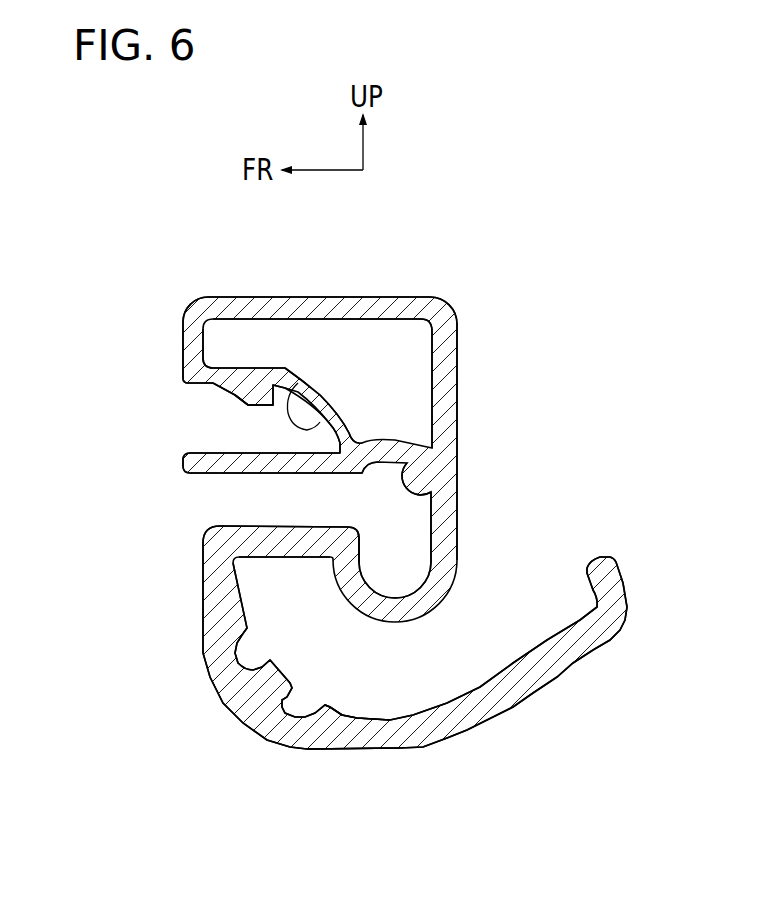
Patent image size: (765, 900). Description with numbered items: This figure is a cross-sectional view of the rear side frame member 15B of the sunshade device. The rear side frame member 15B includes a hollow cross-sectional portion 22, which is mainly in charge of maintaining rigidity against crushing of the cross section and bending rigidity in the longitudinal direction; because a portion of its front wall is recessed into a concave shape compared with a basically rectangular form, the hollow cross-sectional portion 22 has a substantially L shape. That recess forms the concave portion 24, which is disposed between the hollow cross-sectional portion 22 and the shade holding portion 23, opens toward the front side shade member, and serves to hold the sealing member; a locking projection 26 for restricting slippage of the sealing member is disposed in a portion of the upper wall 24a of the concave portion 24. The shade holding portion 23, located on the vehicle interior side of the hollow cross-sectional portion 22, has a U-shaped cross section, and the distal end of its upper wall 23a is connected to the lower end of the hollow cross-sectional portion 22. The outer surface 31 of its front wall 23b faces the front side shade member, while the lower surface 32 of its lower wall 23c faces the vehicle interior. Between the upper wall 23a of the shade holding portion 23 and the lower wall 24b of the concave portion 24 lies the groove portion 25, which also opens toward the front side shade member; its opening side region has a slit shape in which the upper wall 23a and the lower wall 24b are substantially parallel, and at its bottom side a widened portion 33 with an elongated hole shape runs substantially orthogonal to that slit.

The rear side frame member 15B is at (487, 230).
The hollow cross-sectional portion 22 is at (357, 295).
The shade holding portion 23 is at (340, 760).
The upper wall 23a is at (283, 533).
The front wall 23b is at (210, 655).
The lower wall 23c is at (377, 750).
The concave portion 24 is at (335, 410).
The upper wall of the concave portion 24a is at (252, 368).
The lower wall of the concave portion 24b is at (290, 452).
The groove portion 25 is at (242, 475).
The locking projection 26 is at (258, 408).
The outer surface 31 is at (203, 618).
The lower surface 32 is at (393, 750).
The widened portion 33 is at (431, 497).